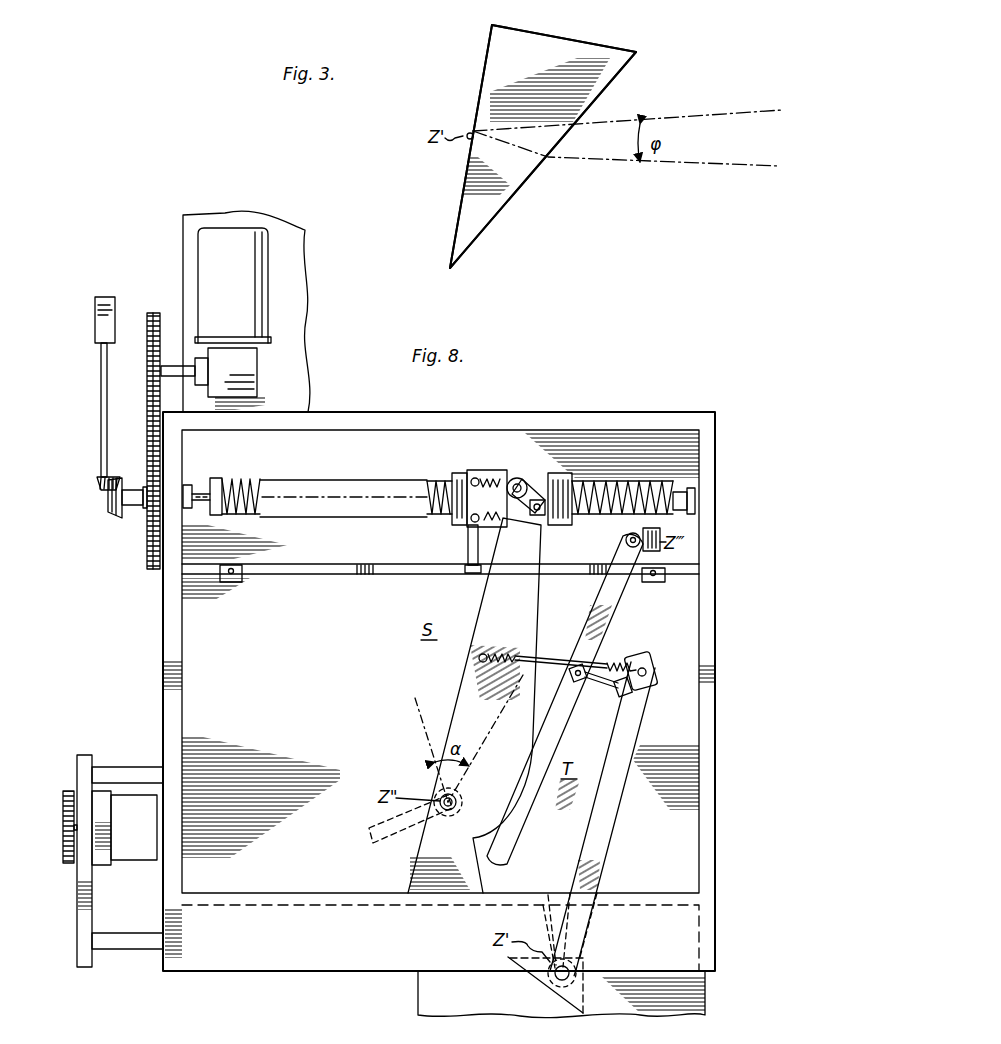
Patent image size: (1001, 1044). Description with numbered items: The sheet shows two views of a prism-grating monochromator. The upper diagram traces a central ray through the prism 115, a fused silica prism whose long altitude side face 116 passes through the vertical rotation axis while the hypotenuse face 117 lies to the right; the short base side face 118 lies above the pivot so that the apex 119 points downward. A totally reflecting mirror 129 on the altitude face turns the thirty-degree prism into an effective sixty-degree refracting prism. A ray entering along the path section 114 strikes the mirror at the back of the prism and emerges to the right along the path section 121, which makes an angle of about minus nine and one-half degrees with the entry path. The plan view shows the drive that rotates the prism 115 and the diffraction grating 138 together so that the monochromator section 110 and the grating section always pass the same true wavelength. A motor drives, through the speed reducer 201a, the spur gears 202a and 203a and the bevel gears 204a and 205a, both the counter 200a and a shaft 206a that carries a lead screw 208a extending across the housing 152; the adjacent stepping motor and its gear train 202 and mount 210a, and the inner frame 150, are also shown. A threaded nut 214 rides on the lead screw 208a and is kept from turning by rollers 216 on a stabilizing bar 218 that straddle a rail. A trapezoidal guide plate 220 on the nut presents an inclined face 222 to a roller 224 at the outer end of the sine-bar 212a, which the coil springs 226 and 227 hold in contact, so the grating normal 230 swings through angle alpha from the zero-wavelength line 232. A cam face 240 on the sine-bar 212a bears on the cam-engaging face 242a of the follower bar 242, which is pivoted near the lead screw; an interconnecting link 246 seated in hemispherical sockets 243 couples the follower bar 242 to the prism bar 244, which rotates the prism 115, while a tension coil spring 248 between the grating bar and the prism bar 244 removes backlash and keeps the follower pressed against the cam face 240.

In FIG. 3, the path section 114 is at (742, 118).
In FIG. 3, the prism 115 is at (624, 48).
In FIG. 8, the prism 115 is at (544, 990).
In FIG. 3, the altitude side face 116 is at (455, 222).
In FIG. 3, the hypotenuse face 117 is at (605, 84).
In FIG. 3, the base side face 118 is at (564, 44).
In FIG. 3, the apex 119 is at (451, 264).
In FIG. 3, the path section 121 is at (620, 164).
In FIG. 3, the totally reflecting mirror 129 is at (482, 106).
In FIG. 8, the monochromator section 110 is at (416, 1002).
In FIG. 8, the diffraction grating 138 is at (400, 840).
In FIG. 8, the inner frame 150 is at (333, 893).
In FIG. 8, the housing 152 is at (740, 836).
In FIG. 8, the counter 200a is at (95, 332).
In FIG. 8, the speed reducer 201a is at (242, 383).
In FIG. 8, the gear train 202 is at (58, 839).
In FIG. 8, the spur gear 202a is at (150, 392).
In FIG. 8, the driven spur gear 203a is at (150, 458).
In FIG. 8, the driving bevel gear 204a is at (108, 510).
In FIG. 8, the bevel gear 205a is at (92, 486).
In FIG. 8, the shaft 206a is at (208, 484).
In FIG. 8, the lead screw 208a is at (378, 482).
In FIG. 8, the stepping motor mount 210a is at (186, 876).
In FIG. 8, the sine-bar 212a is at (460, 678).
In FIG. 8, the threaded nut 214 is at (560, 476).
In FIG. 8, the rollers 216 is at (468, 574).
In FIG. 8, the stabilizing bar 218 is at (468, 545).
In FIG. 8, the trapezoidal guide plate 220 is at (346, 562).
In FIG. 8, the inclined face 222 is at (462, 476).
In FIG. 8, the roller 224 is at (524, 478).
In FIG. 8, the coil spring 226 is at (494, 482).
In FIG. 8, the coil spring 227 is at (528, 520).
In FIG. 8, the normal to diffraction grating 230 is at (424, 738).
In FIG. 8, the line 232 is at (496, 712).
In FIG. 8, the cam face 240 is at (542, 594).
In FIG. 8, the follower bar 242 is at (590, 616).
In FIG. 8, the cam-engaging face 242a is at (570, 654).
In FIG. 8, the hemispherical sockets 243 is at (632, 692).
In FIG. 8, the prism bar 244 is at (617, 798).
In FIG. 8, the interconnecting link 246 is at (603, 692).
In FIG. 8, the tension coil spring 248 is at (512, 652).